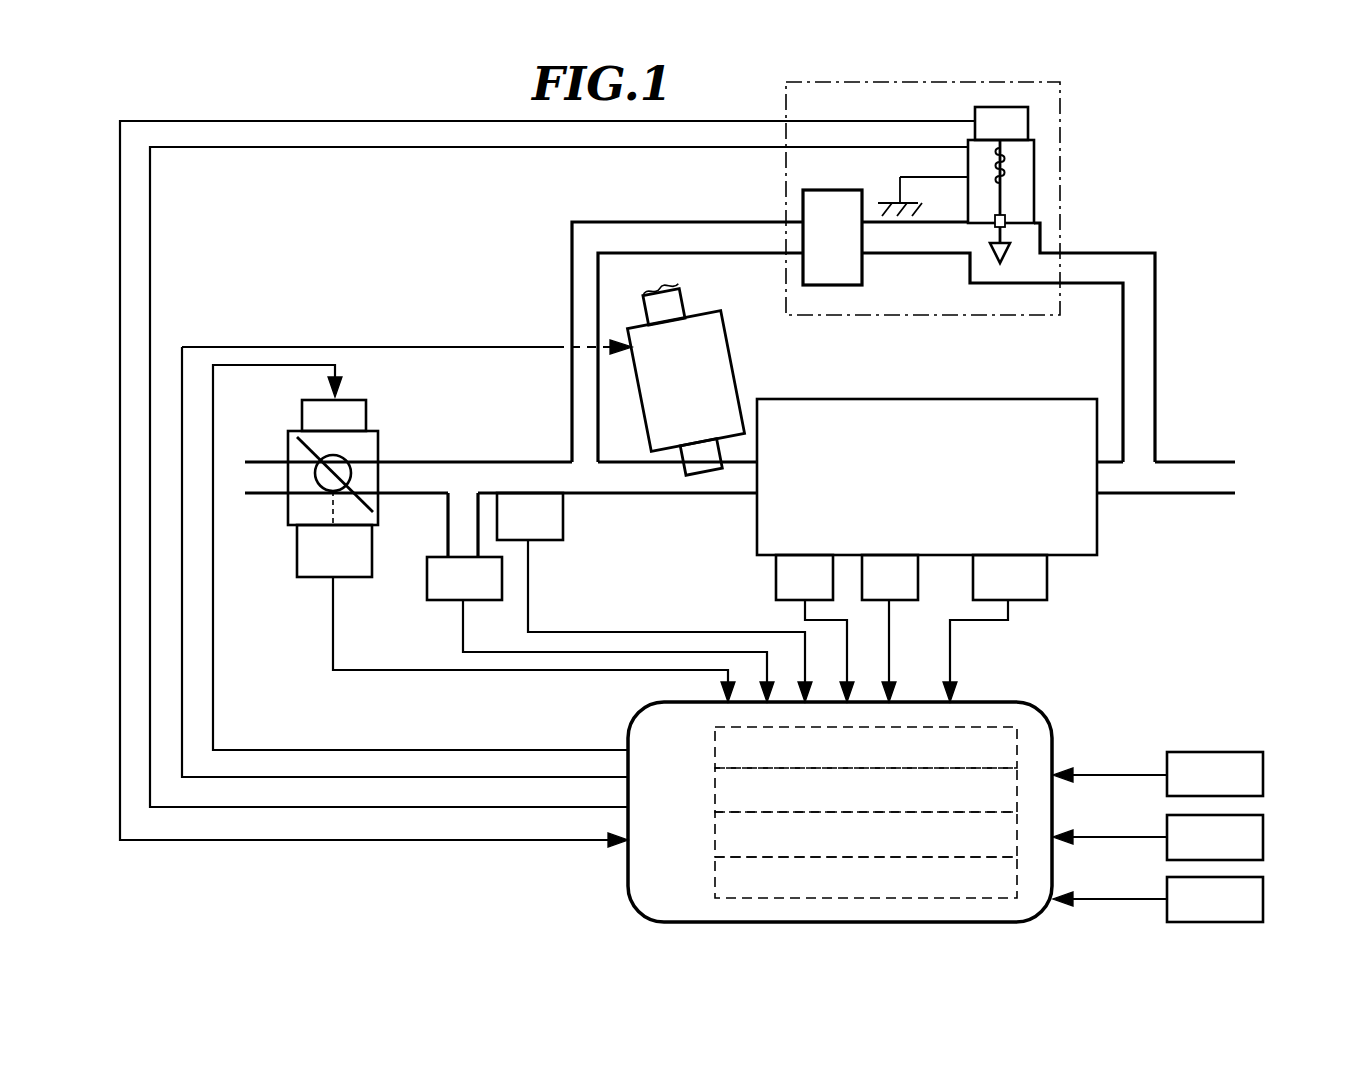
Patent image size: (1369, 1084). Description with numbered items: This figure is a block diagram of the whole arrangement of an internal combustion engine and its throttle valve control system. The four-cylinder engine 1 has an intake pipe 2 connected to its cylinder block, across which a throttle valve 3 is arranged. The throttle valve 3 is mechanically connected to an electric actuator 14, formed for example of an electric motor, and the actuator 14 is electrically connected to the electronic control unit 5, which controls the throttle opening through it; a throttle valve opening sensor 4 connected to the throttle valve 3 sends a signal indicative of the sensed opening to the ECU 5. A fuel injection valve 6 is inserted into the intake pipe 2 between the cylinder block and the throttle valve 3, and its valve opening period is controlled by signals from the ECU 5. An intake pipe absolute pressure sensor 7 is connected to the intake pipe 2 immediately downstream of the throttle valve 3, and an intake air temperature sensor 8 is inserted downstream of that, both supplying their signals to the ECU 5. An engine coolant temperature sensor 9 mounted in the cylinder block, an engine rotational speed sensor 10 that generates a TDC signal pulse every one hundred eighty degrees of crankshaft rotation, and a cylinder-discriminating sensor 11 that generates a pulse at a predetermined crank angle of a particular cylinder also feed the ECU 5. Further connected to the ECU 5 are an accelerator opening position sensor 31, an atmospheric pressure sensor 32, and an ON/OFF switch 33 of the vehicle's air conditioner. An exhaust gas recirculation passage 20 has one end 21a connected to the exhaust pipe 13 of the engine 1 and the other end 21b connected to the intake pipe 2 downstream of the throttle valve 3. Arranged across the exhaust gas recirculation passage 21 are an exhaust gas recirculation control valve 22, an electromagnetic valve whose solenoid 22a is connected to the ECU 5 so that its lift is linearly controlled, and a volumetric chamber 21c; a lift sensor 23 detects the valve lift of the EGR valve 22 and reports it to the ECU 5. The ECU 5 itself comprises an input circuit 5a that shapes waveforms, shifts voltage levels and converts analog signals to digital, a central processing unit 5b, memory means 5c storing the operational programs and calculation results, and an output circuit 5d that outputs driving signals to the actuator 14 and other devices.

The engine 1 is at (1000, 398).
The intake pipe 2 is at (475, 462).
The throttle valve 3 is at (362, 492).
The throttle valve opening sensor 4 is at (375, 558).
The electronic control unit 5 is at (625, 863).
The input circuit 5a is at (1035, 718).
The central processing unit 5b is at (1017, 770).
The memory means 5c is at (1017, 822).
The output circuit 5d is at (1017, 880).
The fuel injection valve 6 is at (733, 350).
The intake pipe absolute pressure sensor 7 is at (458, 600).
The intake air temperature sensor 8 is at (538, 540).
The engine coolant temperature sensor 9 is at (776, 590).
The engine rotational speed sensor 10 is at (895, 605).
The cylinder-discriminating sensor 11 is at (1030, 605).
The exhaust pipe 13 is at (1143, 495).
The electric actuator 14 is at (302, 412).
The exhaust gas recirculation passage 20 is at (1062, 218).
The exhaust gas recirculation passage 21 is at (1145, 290).
The one end 21a is at (1138, 457).
The other end 21b is at (580, 472).
The volumetric chamber 21c is at (803, 192).
The exhaust gas recirculation control valve 22 is at (1034, 178).
The solenoid 22a is at (1034, 150).
The lift sensor 23 is at (1028, 115).
The accelerator opening position sensor 31 is at (1263, 760).
The atmospheric pressure sensor 32 is at (1263, 821).
The ON/OFF switch of an air conditioner 33 is at (1263, 883).